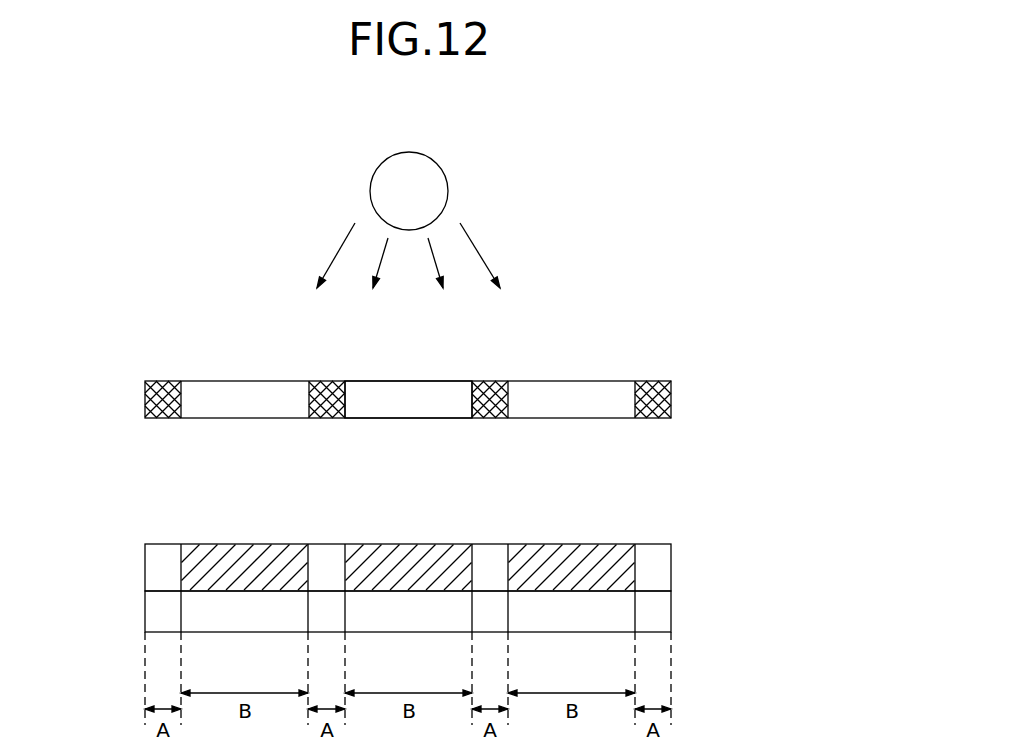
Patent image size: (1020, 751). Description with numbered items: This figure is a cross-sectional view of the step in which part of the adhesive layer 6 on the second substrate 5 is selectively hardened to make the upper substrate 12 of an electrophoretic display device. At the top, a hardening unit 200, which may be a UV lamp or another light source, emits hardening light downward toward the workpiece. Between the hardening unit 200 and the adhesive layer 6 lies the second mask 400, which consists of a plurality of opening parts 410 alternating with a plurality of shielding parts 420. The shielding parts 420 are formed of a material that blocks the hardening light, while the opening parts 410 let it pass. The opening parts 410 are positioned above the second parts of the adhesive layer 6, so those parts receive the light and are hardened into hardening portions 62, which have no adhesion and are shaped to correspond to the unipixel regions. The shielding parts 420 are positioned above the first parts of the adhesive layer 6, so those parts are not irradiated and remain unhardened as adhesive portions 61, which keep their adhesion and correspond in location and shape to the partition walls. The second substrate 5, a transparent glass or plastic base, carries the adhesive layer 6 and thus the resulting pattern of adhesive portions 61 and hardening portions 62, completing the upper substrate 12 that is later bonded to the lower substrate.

The hardening unit 200 is at (430, 180).
The second mask 400 is at (456, 361).
The opening parts 410 is at (577, 388).
The shielding parts 420 is at (488, 381).
The upper substrate 12 is at (429, 539).
The adhesive layer 6 is at (468, 567).
The hardening portions 62 is at (602, 552).
The adhesive portions 61 is at (662, 566).
The second substrate 5 is at (662, 613).